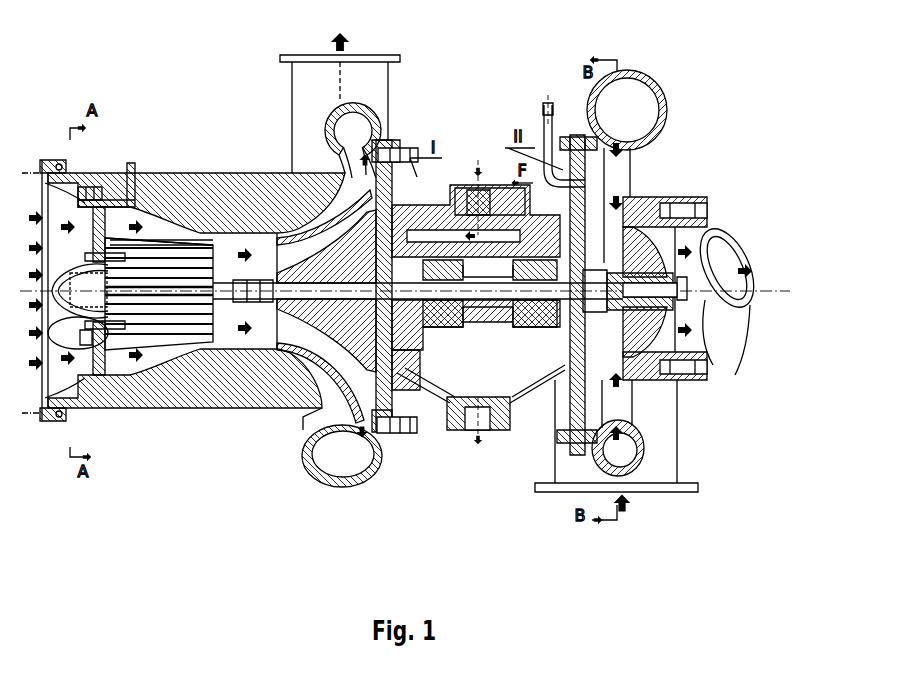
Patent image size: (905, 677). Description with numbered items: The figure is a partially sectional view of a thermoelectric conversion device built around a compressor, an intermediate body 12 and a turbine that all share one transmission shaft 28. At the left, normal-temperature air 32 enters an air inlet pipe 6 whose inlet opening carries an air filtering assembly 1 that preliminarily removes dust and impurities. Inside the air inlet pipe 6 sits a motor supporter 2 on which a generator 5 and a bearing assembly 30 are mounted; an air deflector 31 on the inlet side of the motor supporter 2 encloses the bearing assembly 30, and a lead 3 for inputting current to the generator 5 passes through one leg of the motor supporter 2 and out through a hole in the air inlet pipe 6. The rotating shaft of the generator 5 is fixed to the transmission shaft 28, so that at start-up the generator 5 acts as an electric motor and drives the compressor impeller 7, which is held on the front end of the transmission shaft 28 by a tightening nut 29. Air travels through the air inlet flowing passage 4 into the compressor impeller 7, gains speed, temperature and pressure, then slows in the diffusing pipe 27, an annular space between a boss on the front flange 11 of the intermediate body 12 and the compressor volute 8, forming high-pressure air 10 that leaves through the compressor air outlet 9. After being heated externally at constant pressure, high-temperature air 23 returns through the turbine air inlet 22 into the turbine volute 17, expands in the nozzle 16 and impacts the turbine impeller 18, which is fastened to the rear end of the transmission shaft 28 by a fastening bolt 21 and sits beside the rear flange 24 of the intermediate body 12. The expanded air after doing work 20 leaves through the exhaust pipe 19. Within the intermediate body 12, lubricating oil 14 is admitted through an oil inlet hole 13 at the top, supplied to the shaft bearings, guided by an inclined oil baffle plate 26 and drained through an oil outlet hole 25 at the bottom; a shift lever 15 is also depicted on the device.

The air filtering assembly 1 is at (44, 160).
The motor supporter 2 is at (107, 186).
The lead 3 is at (103, 200).
The air inlet flowing passage 4 is at (150, 245).
The generator 5 is at (180, 240).
The air inlet pipe 6 is at (205, 193).
The compressor impeller 7 is at (315, 223).
The compressor volute 8 is at (345, 148).
The compressor air outlet 9 is at (328, 118).
The high-pressure air 10 is at (345, 35).
The front flange 11 is at (397, 153).
The intermediate body 12 is at (435, 210).
The oil inlet hole 13 is at (478, 160).
The lubricating oil 14 is at (473, 167).
The shift lever 15 is at (547, 108).
The nozzle 16 is at (620, 157).
The turbine volute 17 is at (667, 200).
The turbine impeller 18 is at (683, 215).
The exhaust pipe 19 is at (643, 270).
The air after doing work 20 is at (730, 300).
The fastening bolt 21 is at (680, 365).
The turbine air inlet 22 is at (670, 457).
The high-temperature air 23 is at (653, 490).
The rear flange 24 is at (557, 447).
The oil outlet hole 25 is at (477, 432).
The oil baffle plate 26 is at (417, 383).
The diffusing pipe 27 is at (375, 420).
The transmission shaft 28 is at (303, 292).
The tightening nut 29 is at (267, 282).
The bearing assembly 30 is at (92, 298).
The air deflector 31 is at (67, 292).
The normal-temperature air 32 is at (42, 418).